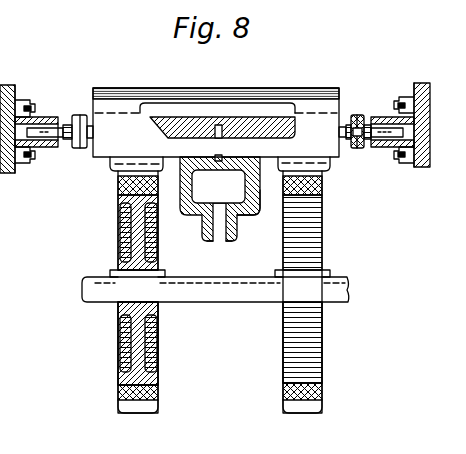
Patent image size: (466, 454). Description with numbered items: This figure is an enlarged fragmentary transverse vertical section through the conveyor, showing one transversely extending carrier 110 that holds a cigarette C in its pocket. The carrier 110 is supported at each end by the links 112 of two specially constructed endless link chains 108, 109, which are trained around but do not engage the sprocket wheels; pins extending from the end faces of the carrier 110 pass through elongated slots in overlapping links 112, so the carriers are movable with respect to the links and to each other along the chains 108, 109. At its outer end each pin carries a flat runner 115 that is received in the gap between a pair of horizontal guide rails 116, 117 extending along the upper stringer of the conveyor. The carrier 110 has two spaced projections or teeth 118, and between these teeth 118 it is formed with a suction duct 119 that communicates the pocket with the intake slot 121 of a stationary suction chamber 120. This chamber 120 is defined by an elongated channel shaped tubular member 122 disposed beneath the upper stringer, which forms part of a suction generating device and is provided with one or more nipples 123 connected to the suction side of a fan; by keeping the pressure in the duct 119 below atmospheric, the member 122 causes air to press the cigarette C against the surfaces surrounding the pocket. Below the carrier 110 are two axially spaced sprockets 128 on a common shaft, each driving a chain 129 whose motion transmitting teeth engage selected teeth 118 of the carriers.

The endless link chain 108 is at (79, 110).
The endless link chain 109 is at (361, 110).
The carrier 110 is at (346, 88).
The link 112 is at (84, 148).
The flat runner 115 is at (44, 128).
The guide rail 116 is at (22, 102).
The guide rail 117 is at (53, 140).
The tooth 118 is at (115, 172).
The suction duct 119 is at (219, 128).
The suction chamber 120 is at (197, 190).
The intake slot 121 is at (219, 160).
The tubular member 122 is at (257, 214).
The nipple 123 is at (217, 243).
The sprocket 128 is at (158, 350).
The chain 129 is at (160, 391).
The cigarette C is at (162, 97).